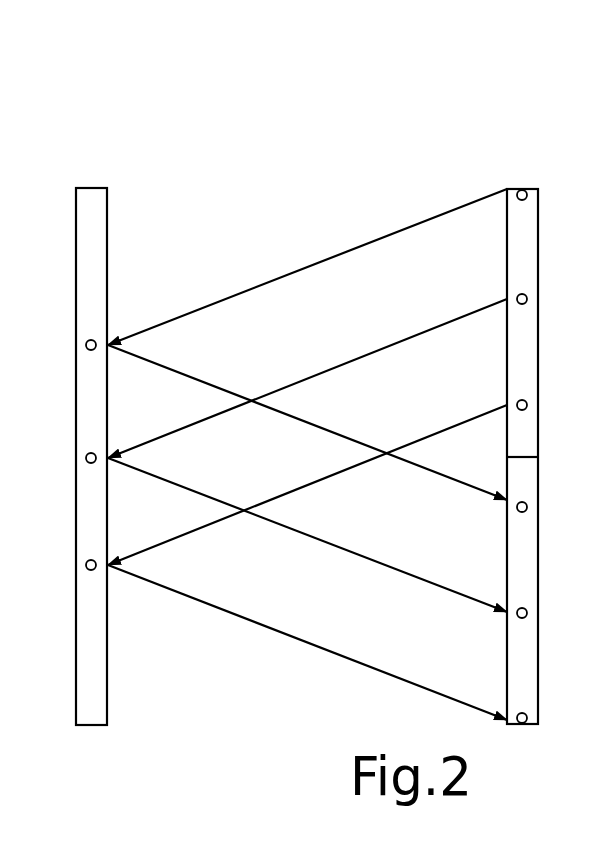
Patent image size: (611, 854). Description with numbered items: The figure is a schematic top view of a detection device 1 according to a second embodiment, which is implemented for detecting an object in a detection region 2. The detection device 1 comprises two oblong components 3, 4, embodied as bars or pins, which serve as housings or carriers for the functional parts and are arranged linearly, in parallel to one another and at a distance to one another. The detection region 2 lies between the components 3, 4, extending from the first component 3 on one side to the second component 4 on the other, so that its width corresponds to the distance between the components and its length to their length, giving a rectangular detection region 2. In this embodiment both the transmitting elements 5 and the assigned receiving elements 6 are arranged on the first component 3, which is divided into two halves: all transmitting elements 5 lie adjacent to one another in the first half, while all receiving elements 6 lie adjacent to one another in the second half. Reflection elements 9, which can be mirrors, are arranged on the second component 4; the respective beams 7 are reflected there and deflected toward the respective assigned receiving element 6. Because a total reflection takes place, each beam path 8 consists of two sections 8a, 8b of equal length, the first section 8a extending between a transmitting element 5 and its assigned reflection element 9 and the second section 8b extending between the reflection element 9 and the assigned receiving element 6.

The detection device 1 is at (527, 113).
The detection region 2 is at (381, 414).
The first component 3 is at (527, 346).
The second component 4 is at (78, 425).
The transmitting elements 5 is at (526, 191).
The receiving elements 6 is at (526, 504).
The beams 7 is at (388, 235).
The beam paths 8 is at (292, 272).
The first section 8a is at (192, 312).
The second section 8b is at (200, 381).
The reflection elements 9 is at (95, 341).